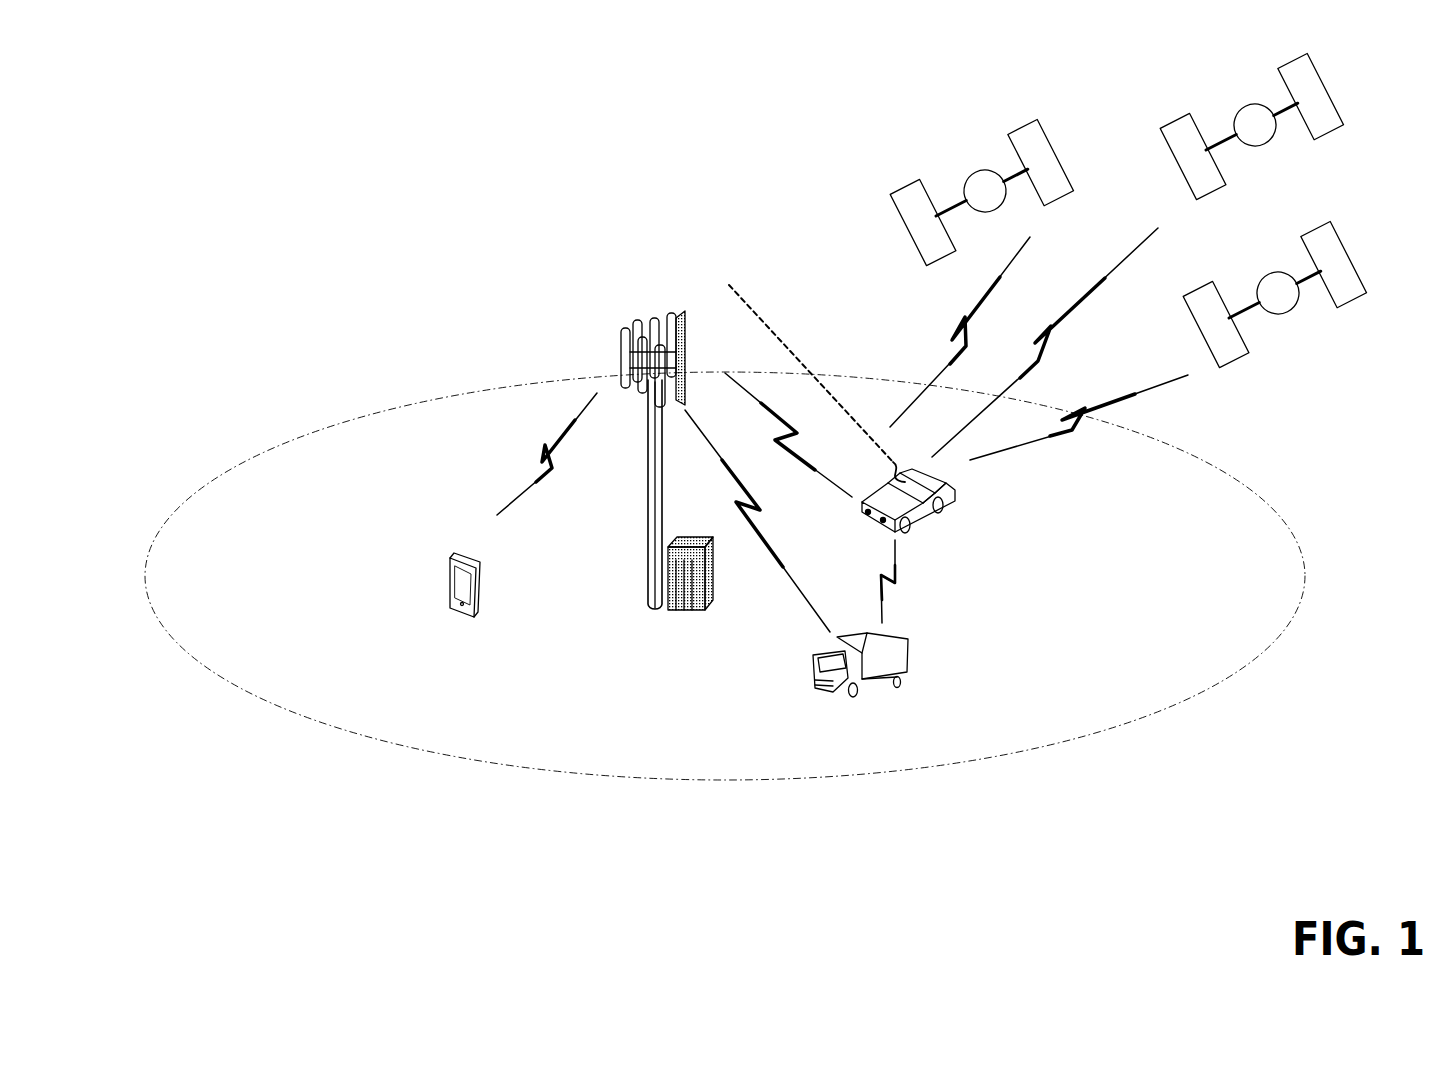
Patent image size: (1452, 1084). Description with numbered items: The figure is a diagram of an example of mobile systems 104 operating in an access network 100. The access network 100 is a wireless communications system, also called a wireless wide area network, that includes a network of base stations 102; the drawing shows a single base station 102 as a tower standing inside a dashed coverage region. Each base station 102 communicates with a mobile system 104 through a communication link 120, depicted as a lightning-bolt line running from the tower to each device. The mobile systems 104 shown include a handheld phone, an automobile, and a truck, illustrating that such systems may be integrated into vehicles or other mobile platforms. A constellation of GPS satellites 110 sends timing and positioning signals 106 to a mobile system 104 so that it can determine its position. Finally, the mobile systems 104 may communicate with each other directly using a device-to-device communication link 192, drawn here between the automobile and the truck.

The access network 100 is at (226, 244).
The base station 102 is at (651, 535).
The mobile system 104 is at (480, 567).
The timing and positioning signals 106 is at (1160, 385).
The GPS satellites 110 is at (1050, 128).
The communication link 120 is at (498, 488).
The device-to-device (D2D) communication link 192 is at (897, 566).